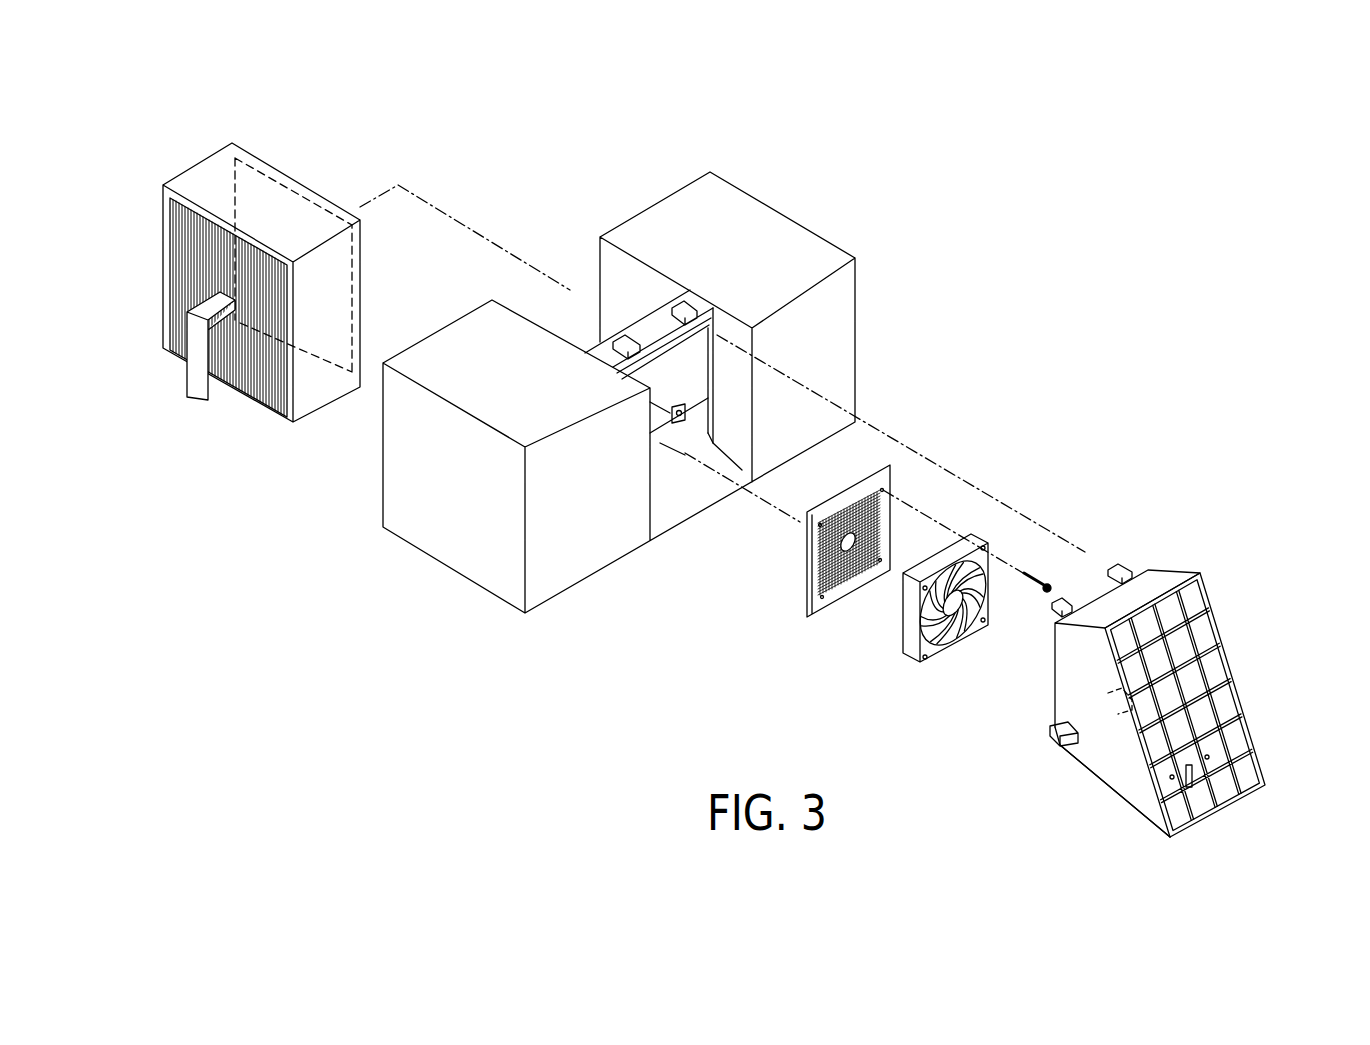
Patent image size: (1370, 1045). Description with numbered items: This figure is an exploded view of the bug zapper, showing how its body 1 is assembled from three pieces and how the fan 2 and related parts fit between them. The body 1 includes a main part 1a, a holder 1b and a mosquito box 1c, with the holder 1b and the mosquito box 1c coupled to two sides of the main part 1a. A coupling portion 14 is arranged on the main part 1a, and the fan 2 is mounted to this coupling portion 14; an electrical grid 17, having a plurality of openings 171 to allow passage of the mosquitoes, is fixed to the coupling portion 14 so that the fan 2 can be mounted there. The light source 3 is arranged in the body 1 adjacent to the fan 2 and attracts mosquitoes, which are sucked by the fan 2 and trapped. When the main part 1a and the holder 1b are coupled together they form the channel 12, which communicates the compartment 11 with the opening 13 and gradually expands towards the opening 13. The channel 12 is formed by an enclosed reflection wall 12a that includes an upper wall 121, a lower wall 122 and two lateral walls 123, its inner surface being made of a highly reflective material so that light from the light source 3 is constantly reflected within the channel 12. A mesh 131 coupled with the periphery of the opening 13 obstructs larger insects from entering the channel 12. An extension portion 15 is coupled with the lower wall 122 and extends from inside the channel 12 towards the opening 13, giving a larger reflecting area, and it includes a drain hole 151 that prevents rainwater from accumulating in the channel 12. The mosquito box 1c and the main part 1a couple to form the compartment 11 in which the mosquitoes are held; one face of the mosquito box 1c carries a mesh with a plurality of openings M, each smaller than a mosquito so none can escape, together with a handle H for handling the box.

The body 1 is at (915, 210).
The main part 1a is at (790, 185).
The holder 1b is at (1228, 560).
The mosquito box 1c is at (365, 180).
The fan 2 is at (933, 653).
The light source 3 is at (705, 327).
The compartment 11 is at (280, 208).
The channel 12 is at (1120, 760).
The reflection wall 12a is at (1020, 477).
The opening 13 is at (1200, 632).
The coupling portion 14 is at (660, 467).
The extension portion 15 is at (1148, 830).
The electrical grid 17 is at (813, 600).
The upper wall 121 is at (1155, 573).
The lower wall 122 is at (1055, 783).
The lateral walls 123 is at (1088, 640).
The mesh 131 is at (1220, 690).
The drain hole 151 is at (1200, 797).
The openings 171 is at (832, 603).
The handle H is at (193, 373).
The openings M is at (267, 400).